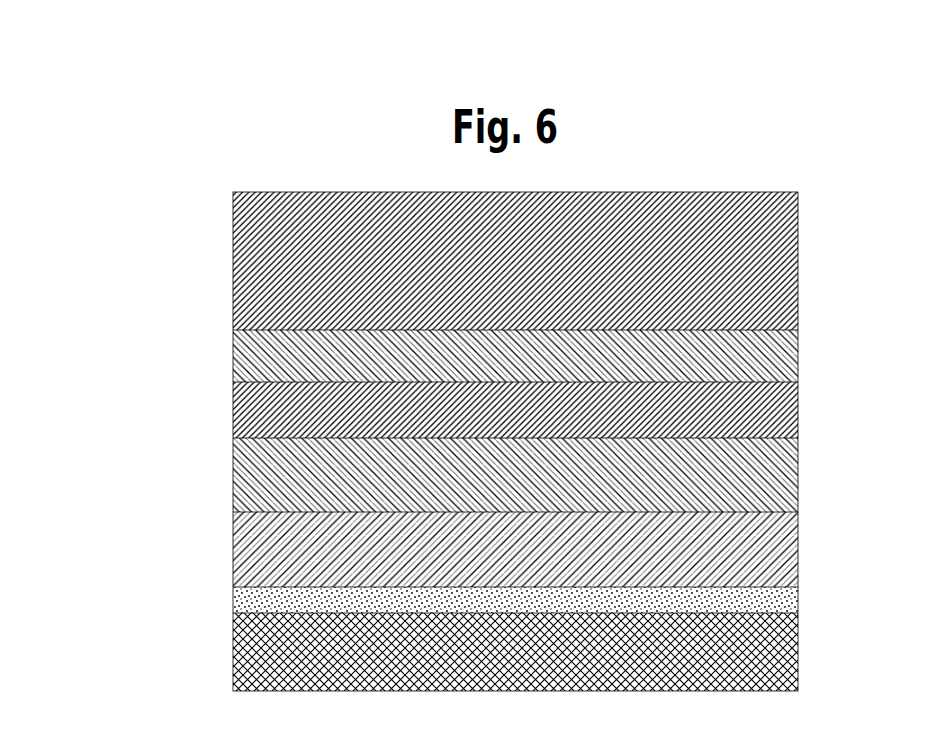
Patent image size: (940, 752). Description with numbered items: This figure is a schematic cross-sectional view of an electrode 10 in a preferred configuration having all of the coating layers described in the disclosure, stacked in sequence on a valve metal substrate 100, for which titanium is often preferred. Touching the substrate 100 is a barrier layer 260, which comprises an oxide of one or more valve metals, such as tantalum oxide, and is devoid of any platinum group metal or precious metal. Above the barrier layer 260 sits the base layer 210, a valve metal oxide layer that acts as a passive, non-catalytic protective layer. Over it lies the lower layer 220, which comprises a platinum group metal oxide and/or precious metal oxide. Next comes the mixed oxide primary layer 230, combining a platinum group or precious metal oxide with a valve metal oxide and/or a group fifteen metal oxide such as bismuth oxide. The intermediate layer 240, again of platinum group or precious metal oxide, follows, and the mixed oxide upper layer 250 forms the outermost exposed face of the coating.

The electrode 10 is at (158, 212).
The substrate 100 is at (793, 650).
The barrier layer 260 is at (793, 603).
The base layer 210 is at (792, 553).
The lower layer 220 is at (793, 478).
The mixed oxide primary layer 230 is at (800, 413).
The intermediate layer 240 is at (800, 358).
The mixed oxide upper layer 250 is at (800, 273).